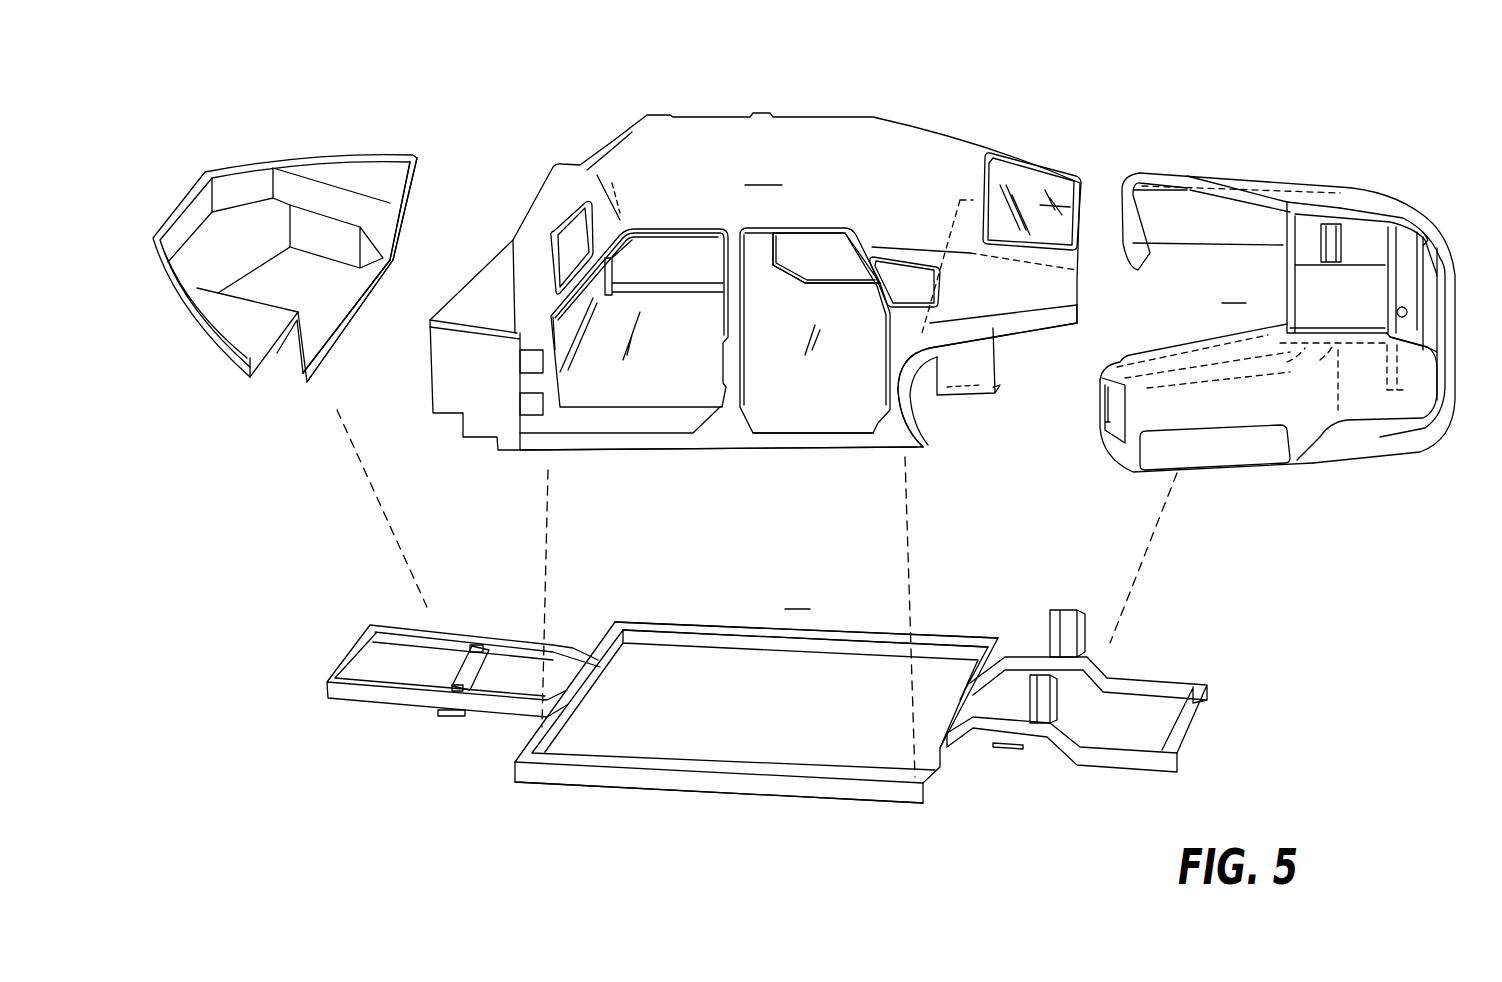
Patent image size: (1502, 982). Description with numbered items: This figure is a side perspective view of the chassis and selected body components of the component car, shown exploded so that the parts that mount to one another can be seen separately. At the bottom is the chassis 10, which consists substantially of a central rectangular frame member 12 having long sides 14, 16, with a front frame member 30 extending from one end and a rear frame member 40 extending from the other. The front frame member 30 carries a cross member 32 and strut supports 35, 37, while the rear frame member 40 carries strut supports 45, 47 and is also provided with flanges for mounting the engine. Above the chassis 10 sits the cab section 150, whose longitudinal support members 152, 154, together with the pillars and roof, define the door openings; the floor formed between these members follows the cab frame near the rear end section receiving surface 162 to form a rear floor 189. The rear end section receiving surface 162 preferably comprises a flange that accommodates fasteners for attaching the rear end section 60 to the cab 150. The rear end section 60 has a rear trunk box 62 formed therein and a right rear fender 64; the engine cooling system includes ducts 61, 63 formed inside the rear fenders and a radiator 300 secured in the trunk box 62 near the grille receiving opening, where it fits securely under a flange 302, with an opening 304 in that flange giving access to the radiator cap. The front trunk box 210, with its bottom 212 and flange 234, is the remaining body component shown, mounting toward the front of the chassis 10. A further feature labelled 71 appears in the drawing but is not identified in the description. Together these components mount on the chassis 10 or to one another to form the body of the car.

The chassis 10 is at (767, 710).
The central rectangular frame member 12 is at (788, 788).
The long side 14 is at (828, 657).
The long side 16 is at (700, 760).
The front frame member 30 is at (385, 700).
The cross member 32 is at (453, 672).
The strut support 35 is at (480, 645).
The strut support 37 is at (462, 716).
The rear frame member 40 is at (1167, 688).
The strut support 45 is at (1042, 728).
The strut support 47 is at (1063, 607).
The rear end section 60 is at (1301, 322).
The duct 61 is at (1307, 402).
The rear trunk box 62 is at (1334, 289).
The duct 63 is at (1197, 227).
The right rear fender 64 is at (1372, 185).
The body side lower edge 71 is at (970, 373).
The cab section 150 is at (755, 281).
The longitudinal support member 152 is at (728, 453).
The longitudinal support member 154 is at (807, 288).
The rear end section receiving surface 162 is at (1040, 330).
The rear floor 189 is at (1013, 297).
The front trunk box 210 is at (280, 162).
The bottom 212 is at (337, 312).
The flange 234 is at (393, 226).
The radiator 300 is at (1400, 382).
The flange 302 is at (1402, 266).
The opening 304 is at (1408, 311).